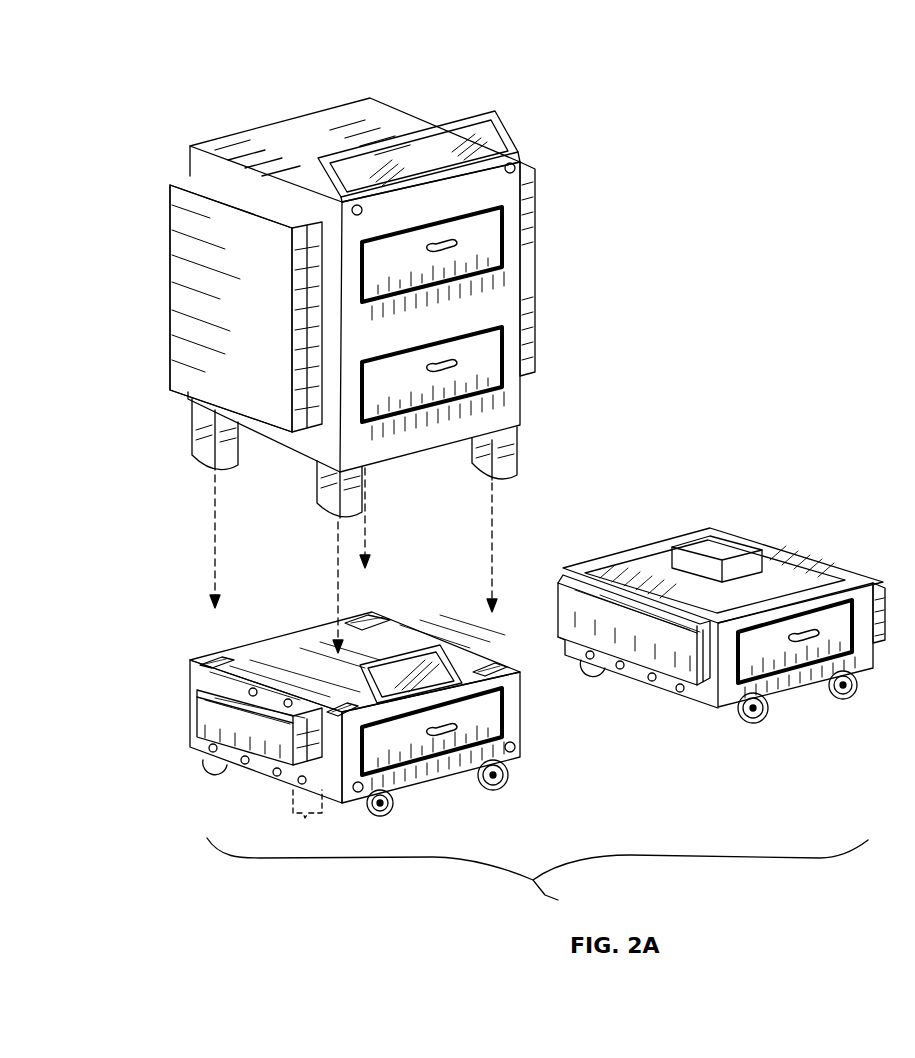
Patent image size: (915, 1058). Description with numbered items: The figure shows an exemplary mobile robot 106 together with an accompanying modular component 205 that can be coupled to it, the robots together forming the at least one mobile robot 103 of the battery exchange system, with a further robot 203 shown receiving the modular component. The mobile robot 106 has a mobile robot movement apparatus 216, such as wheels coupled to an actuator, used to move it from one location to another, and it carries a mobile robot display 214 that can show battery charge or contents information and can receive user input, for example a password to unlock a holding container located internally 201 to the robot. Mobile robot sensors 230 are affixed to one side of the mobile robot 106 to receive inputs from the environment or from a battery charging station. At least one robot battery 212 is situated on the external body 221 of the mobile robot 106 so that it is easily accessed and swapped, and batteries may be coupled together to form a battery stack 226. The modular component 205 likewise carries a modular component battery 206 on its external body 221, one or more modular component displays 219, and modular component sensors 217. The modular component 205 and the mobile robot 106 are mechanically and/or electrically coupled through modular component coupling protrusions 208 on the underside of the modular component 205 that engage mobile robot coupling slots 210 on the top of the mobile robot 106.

The modular component 205 is at (482, 75).
The modular component sensors 217 is at (356, 204).
The battery stack 226 is at (192, 173).
The modular component display 219 is at (503, 137).
The modular component battery 206 is at (198, 386).
The external body 221 is at (528, 394).
The modular component coupling protrusion 208 is at (218, 470).
The mobile robot coupling slot 210 is at (346, 703).
The mobile robot display 214 is at (422, 640).
The cart 203 is at (191, 694).
The robot battery 212 is at (210, 712).
The mobile robot 106 is at (185, 755).
The internal location 201 is at (720, 549).
The mobile robot movement apparatus 216 is at (475, 800).
The mobile robot sensors 230 is at (522, 737).
The mobile robot 103 is at (537, 877).